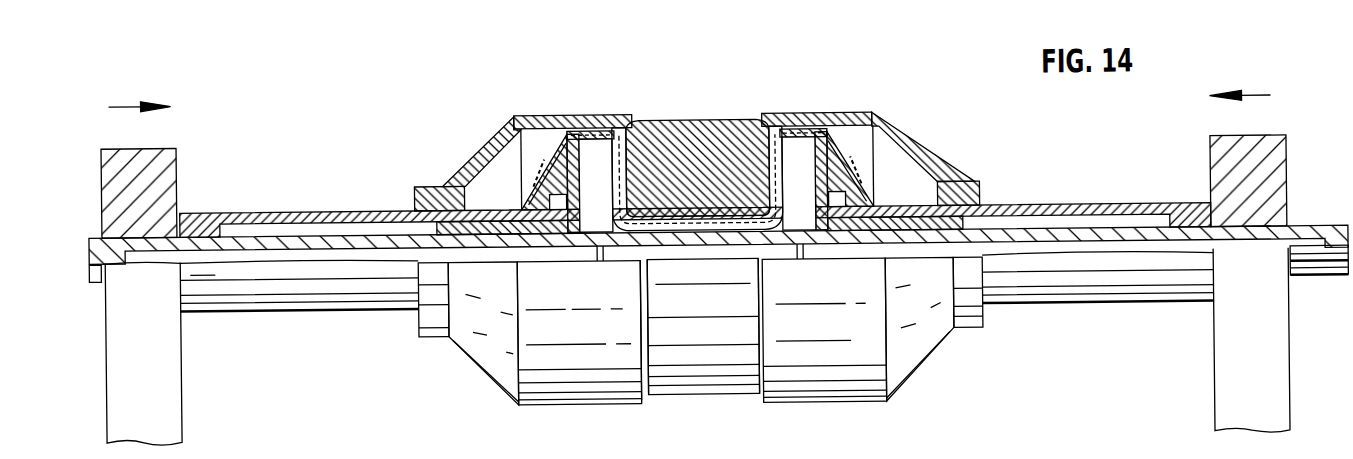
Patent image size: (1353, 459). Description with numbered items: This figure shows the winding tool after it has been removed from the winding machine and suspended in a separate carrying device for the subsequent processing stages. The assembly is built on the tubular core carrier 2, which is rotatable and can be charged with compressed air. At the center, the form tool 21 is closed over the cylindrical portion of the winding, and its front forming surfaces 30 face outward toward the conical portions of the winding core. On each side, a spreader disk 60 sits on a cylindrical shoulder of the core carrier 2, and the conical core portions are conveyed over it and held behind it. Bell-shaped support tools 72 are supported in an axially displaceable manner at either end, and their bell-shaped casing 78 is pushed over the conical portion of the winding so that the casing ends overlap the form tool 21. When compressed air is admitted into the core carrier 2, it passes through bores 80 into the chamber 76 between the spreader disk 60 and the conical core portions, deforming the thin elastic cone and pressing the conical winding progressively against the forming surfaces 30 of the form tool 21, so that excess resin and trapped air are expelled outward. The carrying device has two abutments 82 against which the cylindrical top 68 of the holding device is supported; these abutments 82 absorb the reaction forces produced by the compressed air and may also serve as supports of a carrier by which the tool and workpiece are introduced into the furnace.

The core carrier 2 is at (1317, 232).
The form tool 21 is at (754, 86).
The forming surfaces 30 is at (636, 158).
The spreader disk 60 is at (567, 131).
The axial shoulder of the holding device 68 is at (1048, 207).
The bell-shaped support tool 72 is at (460, 146).
The chamber 76 is at (597, 153).
The bell-shaped casing 78 is at (540, 113).
The bores 80 is at (599, 262).
The abutments 82 is at (177, 171).